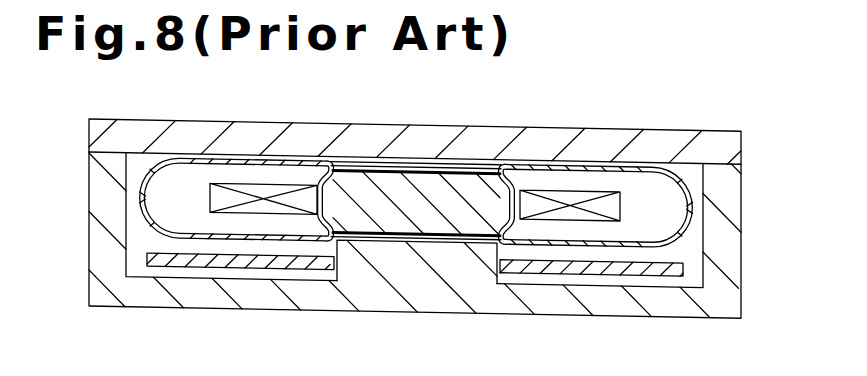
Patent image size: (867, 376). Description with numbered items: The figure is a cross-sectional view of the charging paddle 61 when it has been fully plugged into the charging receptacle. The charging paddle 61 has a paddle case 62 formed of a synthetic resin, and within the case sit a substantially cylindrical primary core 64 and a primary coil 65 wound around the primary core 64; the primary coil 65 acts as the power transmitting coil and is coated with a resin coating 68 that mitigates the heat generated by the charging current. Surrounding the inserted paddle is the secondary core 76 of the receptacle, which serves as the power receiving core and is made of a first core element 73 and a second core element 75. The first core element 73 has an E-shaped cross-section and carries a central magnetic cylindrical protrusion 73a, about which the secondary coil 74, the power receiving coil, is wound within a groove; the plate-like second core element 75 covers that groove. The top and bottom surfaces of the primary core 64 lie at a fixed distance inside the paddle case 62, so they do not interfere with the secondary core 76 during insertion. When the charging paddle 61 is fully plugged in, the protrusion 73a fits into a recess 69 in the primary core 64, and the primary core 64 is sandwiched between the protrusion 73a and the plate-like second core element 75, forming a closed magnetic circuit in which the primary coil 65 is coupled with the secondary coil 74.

The charging paddle 61 is at (353, 160).
The paddle case 62 is at (155, 228).
The primary core 64 is at (337, 210).
The primary coil 65 is at (618, 194).
The resin coating 68 is at (425, 164).
The recess 69 is at (392, 241).
The first core element 73 is at (662, 301).
The protrusion 73a is at (433, 240).
The secondary coil 74 is at (592, 260).
The second core element 75 is at (735, 128).
The secondary core 76 is at (752, 274).